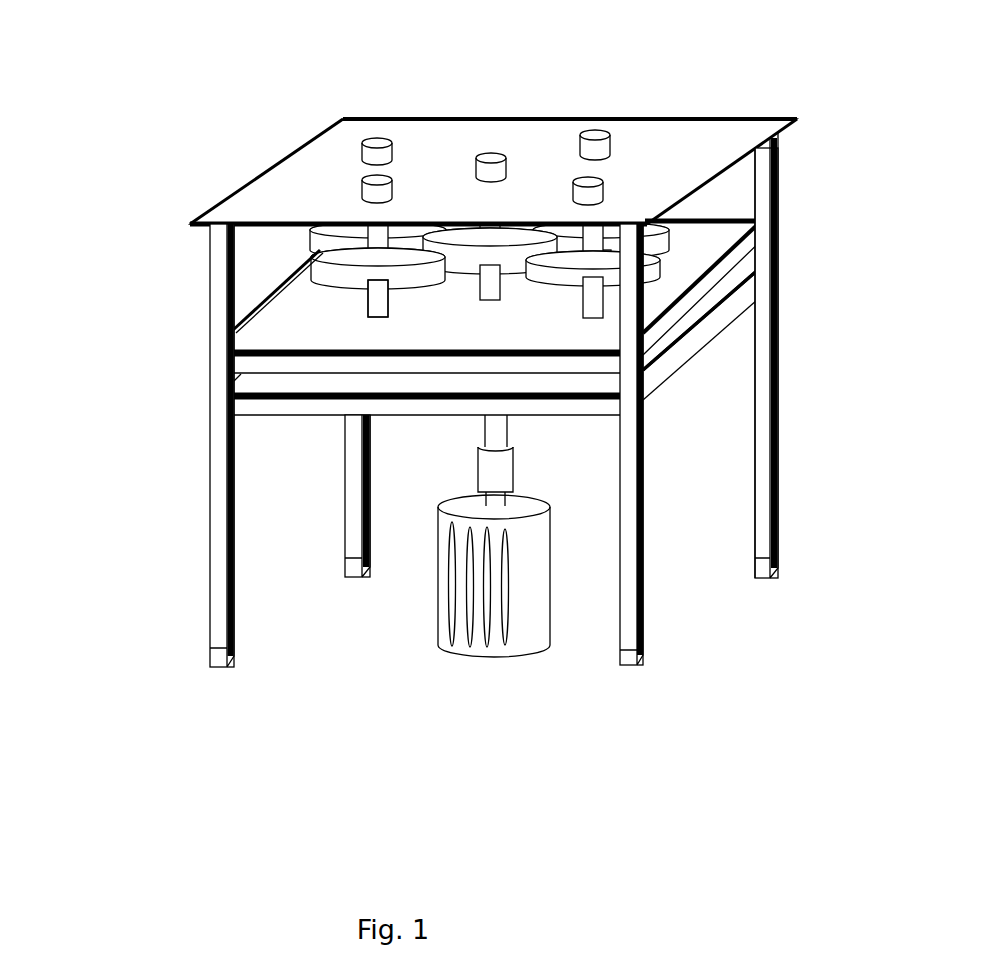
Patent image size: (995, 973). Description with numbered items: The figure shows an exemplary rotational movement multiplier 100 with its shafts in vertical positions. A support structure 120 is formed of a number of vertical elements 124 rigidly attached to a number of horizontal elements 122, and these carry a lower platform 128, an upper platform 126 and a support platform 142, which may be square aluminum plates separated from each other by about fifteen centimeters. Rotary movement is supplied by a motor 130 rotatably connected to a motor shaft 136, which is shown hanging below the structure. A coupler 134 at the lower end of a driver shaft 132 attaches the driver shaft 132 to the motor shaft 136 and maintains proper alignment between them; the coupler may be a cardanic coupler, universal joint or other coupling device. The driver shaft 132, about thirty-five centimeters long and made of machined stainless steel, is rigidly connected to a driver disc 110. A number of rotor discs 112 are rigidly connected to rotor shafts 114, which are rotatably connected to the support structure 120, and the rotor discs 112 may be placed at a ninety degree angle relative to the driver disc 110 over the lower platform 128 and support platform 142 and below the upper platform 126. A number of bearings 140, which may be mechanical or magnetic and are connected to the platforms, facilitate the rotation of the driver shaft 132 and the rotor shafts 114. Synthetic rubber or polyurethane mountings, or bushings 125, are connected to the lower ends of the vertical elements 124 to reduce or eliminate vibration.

The rotational movement multiplier 100 is at (243, 107).
The driver disc 110 is at (510, 255).
The rotor discs 112 is at (342, 273).
The rotor shafts 114 is at (372, 295).
The support structure 120 is at (450, 402).
The horizontal elements 122 is at (680, 312).
The vertical elements 124 is at (207, 505).
The mounting (bushing) 125 is at (210, 622).
The upper platform 126 is at (262, 184).
The lower platform 128 is at (707, 250).
The motor 130 is at (531, 632).
The driver shaft 132 is at (505, 443).
The coupler 134 is at (480, 468).
The motor shaft 136 is at (487, 498).
The bearings 140 is at (374, 140).
The support platform 142 is at (710, 302).